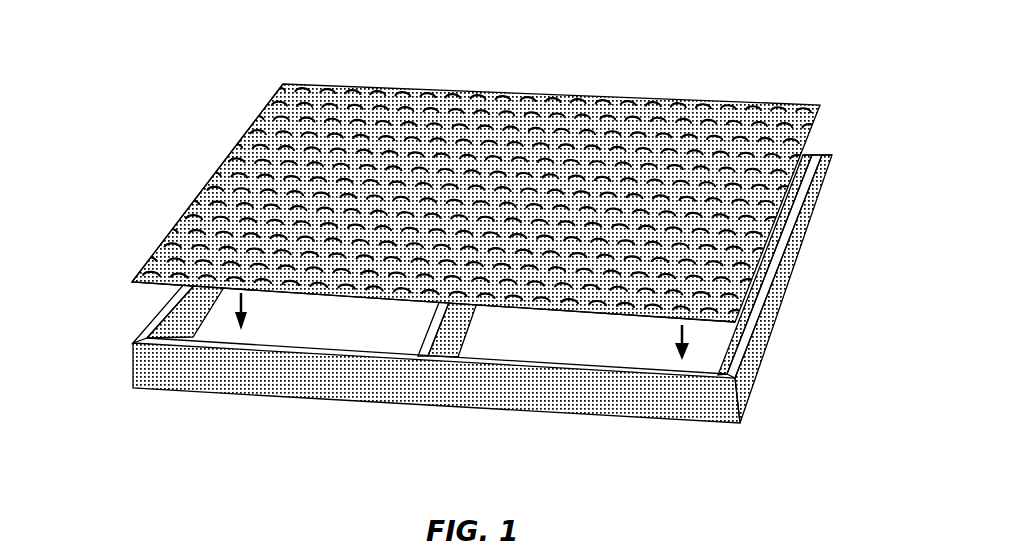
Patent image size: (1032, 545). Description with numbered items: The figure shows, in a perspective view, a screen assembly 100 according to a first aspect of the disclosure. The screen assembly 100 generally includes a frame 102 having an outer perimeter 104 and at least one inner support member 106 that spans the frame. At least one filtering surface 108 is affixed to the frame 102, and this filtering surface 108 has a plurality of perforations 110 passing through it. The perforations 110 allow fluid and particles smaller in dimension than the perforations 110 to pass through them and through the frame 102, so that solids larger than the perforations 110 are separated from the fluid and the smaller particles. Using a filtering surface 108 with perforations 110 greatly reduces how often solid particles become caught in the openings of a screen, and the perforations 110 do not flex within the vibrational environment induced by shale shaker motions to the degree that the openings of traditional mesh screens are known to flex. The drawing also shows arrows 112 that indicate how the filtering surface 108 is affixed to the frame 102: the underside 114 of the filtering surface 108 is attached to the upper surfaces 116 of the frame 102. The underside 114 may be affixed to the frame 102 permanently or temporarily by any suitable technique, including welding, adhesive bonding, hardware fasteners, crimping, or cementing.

The screen assembly 100 is at (758, 63).
The frame 102 is at (481, 283).
The outer perimeter 104 is at (817, 156).
The inner support member 106 is at (425, 318).
The filtering surface 108 is at (476, 168).
The perforations 110 is at (270, 112).
The arrows 112 is at (246, 305).
The underside 114 is at (140, 288).
The upper surfaces 116 is at (200, 345).